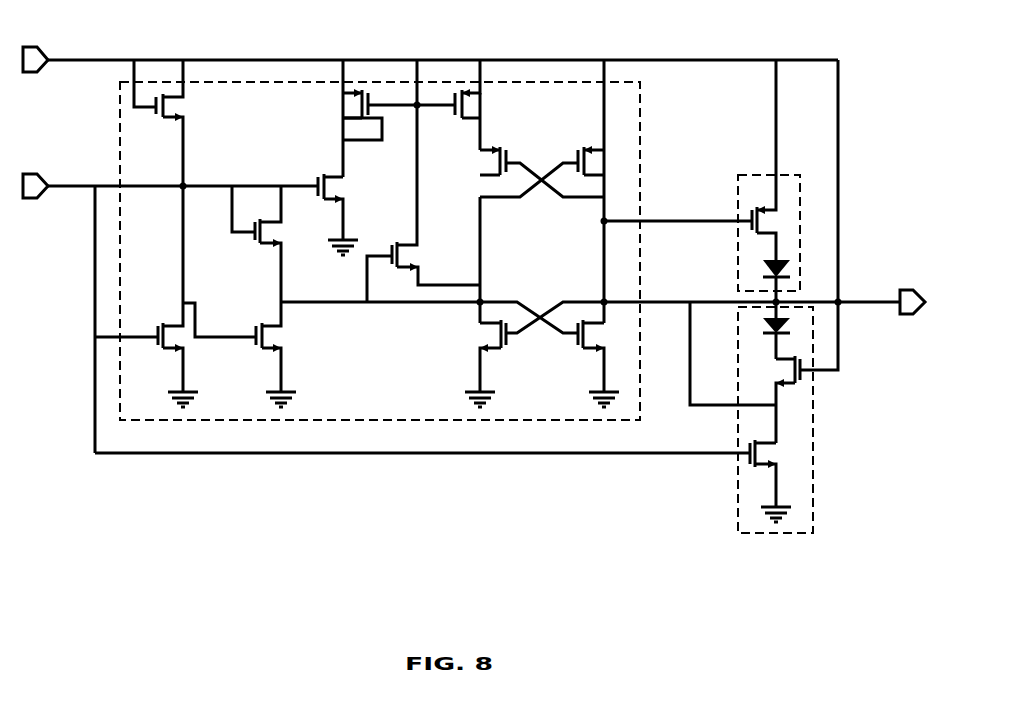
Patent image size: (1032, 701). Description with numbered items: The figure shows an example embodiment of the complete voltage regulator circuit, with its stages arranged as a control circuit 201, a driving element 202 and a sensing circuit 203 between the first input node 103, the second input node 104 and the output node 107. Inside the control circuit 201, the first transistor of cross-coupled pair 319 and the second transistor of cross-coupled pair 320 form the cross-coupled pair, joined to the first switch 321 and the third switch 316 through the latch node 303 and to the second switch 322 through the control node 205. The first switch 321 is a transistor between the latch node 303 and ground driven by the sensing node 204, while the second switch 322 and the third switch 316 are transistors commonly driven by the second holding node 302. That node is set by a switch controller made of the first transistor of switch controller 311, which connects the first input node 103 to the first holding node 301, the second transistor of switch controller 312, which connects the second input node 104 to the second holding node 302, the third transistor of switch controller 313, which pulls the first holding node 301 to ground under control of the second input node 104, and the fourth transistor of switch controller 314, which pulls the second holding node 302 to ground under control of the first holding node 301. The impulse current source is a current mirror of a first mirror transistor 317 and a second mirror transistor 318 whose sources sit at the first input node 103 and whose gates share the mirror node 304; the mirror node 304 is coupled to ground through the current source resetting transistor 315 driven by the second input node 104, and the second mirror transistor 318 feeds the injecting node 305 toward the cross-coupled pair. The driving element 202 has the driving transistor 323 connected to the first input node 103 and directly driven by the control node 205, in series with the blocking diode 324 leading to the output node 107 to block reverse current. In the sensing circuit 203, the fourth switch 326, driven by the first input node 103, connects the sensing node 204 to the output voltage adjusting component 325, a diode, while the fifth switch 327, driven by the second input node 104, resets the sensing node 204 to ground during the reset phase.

The first input node 103 is at (58, 58).
The second input node 104 is at (55, 190).
The output node 107 is at (880, 301).
The control circuit 201 is at (118, 138).
The driving element 202 is at (785, 175).
The sensing circuit 203 is at (735, 482).
The sensing node 204 is at (680, 300).
The control node 205 is at (680, 220).
The first holding node 301 is at (215, 340).
The second holding node 302 is at (357, 303).
The latch node 303 is at (482, 250).
The mirror node 304 is at (369, 135).
The injecting node 305 is at (478, 126).
The first transistor of switch controller 311 is at (165, 120).
The second transistor of switch controller 312 is at (265, 220).
The third transistor of switch controller 313 is at (162, 320).
The fourth transistor of switch controller 314 is at (260, 320).
The current source resetting transistor 315 is at (318, 180).
The third switch 316 is at (408, 240).
The first mirror transistor 317 is at (347, 92).
The second mirror transistor 318 is at (480, 93).
The first transistor of cross-coupled pair 319 is at (502, 150).
The second transistor of cross-coupled pair 320 is at (583, 150).
The first switch 321 is at (495, 349).
The second switch 322 is at (590, 349).
The driving transistor 323 is at (780, 210).
The blocking diode 324 is at (790, 262).
The output voltage adjusting component 325 is at (790, 325).
The fourth switch 326 is at (800, 383).
The fifth switch 327 is at (780, 462).